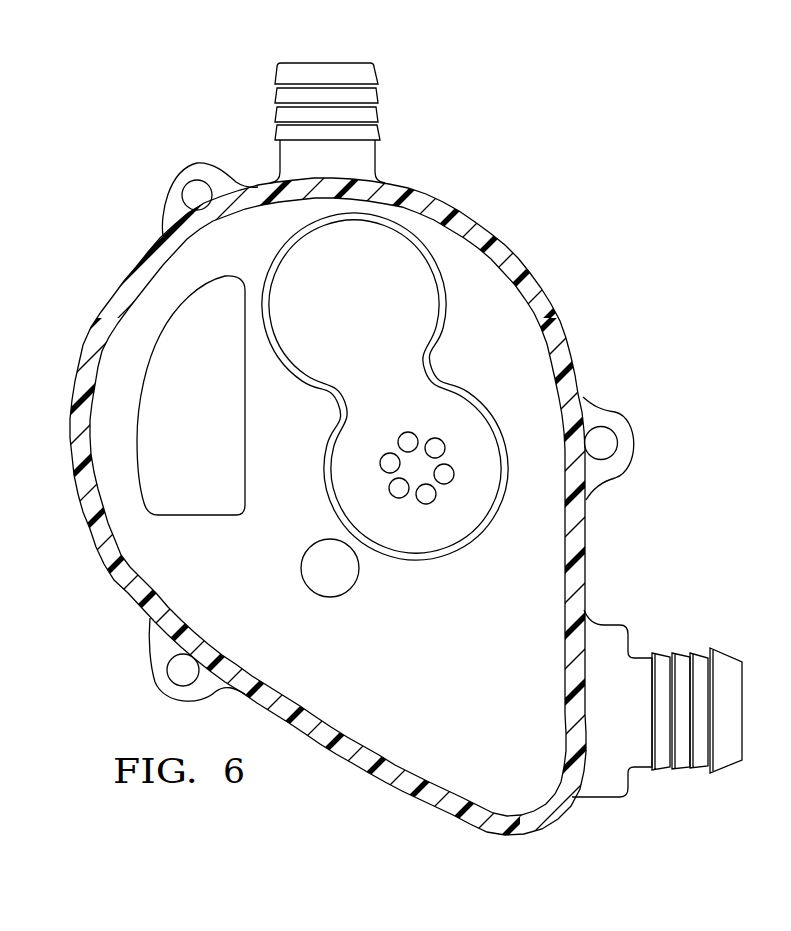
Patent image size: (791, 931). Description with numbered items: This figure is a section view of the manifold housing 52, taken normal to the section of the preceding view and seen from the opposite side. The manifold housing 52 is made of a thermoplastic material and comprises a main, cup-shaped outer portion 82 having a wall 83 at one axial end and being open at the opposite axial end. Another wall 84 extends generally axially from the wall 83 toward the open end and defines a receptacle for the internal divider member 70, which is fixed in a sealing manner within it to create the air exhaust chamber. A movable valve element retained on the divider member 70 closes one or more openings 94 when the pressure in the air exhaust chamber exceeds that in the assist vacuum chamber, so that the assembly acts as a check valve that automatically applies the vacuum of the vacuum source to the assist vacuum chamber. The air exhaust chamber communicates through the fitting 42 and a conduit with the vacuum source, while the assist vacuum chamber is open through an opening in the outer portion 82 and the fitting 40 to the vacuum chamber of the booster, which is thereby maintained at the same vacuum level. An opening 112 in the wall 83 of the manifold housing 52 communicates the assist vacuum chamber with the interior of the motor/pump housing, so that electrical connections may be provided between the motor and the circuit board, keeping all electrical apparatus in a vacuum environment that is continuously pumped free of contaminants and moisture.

The manifold housing 52 is at (195, 117).
The fitting 42 is at (373, 95).
The fitting 40 is at (678, 765).
The internal divider member 70 is at (390, 258).
The wall 84 is at (447, 298).
The outer portion 82 is at (563, 357).
The wall 83 is at (449, 742).
The openings 94 is at (452, 470).
The opening 112 is at (138, 410).